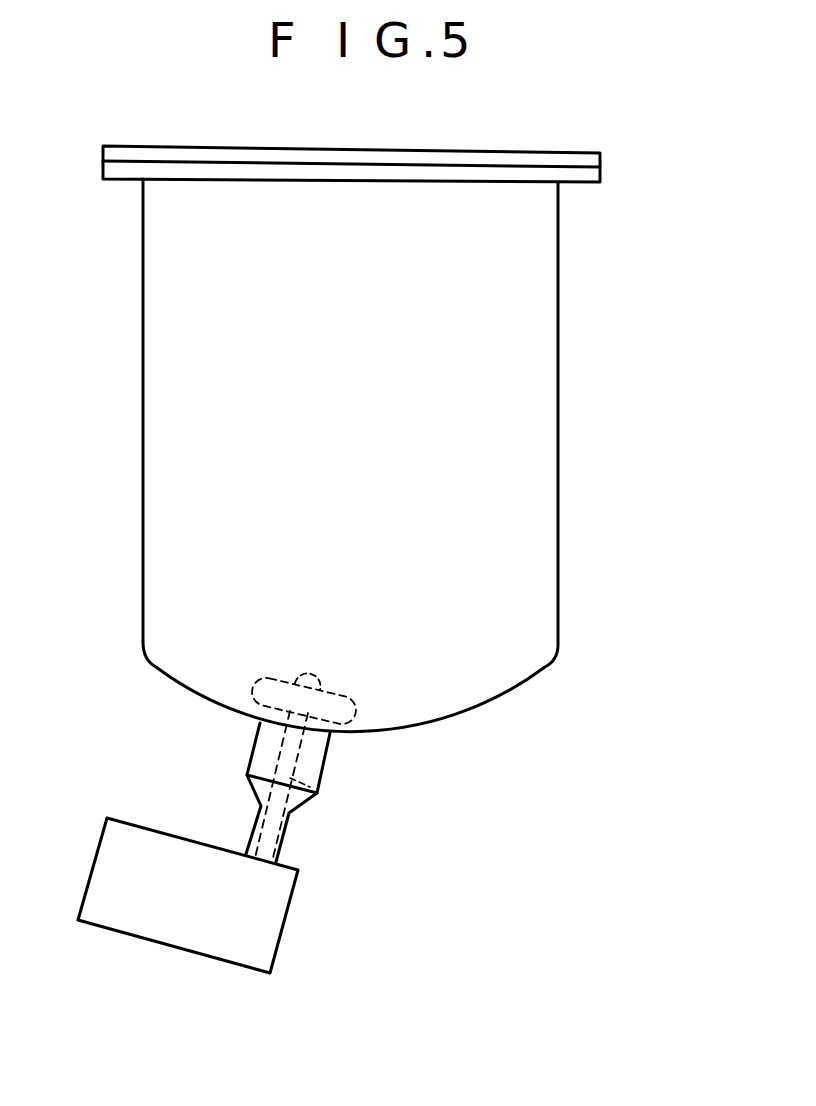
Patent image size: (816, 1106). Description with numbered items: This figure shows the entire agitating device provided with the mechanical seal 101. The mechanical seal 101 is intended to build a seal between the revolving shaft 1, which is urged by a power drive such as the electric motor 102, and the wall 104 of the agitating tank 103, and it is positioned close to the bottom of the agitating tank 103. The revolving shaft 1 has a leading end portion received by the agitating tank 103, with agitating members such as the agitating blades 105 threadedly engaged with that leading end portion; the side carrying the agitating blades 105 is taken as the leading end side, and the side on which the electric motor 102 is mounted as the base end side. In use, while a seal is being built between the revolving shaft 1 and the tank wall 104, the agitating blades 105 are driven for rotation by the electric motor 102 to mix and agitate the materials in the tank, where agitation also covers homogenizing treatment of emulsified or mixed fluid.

The revolving shaft 1 is at (325, 798).
The mechanical seal 101 is at (327, 767).
The electric motor 102 is at (150, 940).
The agitating tank 103 is at (478, 382).
The wall 104 is at (467, 715).
The agitating blades 105 is at (253, 690).